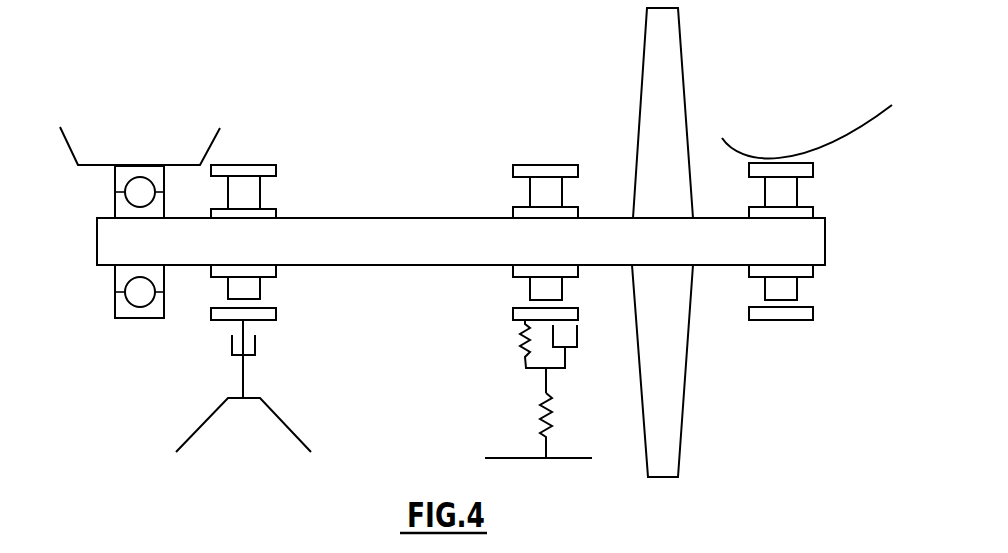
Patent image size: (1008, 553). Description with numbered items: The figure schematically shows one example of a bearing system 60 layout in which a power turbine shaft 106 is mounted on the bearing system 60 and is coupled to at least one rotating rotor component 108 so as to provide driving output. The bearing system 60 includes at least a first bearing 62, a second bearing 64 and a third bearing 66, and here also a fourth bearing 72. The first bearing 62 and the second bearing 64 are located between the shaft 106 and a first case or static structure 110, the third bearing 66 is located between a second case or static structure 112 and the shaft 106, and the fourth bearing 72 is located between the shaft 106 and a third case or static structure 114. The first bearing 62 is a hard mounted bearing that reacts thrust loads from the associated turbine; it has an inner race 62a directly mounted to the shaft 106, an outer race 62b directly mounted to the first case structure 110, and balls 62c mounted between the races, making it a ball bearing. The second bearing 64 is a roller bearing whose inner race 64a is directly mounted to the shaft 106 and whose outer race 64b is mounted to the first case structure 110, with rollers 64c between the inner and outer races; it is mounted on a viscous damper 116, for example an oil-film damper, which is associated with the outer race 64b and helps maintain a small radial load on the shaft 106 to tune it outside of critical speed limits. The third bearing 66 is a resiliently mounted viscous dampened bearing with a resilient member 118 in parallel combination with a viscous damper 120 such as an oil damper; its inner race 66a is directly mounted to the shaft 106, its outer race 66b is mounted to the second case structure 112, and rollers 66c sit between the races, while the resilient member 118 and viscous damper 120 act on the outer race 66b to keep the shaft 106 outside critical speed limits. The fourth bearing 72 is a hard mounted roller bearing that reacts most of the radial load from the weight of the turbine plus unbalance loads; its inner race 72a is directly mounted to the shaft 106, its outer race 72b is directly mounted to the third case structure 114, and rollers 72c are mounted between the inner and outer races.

The bearing system 60 is at (100, 94).
The first bearing 62 is at (133, 246).
The inner race 62a is at (155, 213).
The outer race 62b is at (133, 172).
The balls 62c is at (128, 185).
The second bearing 64 is at (279, 231).
The inner race 64a is at (277, 215).
The outer race 64b is at (242, 163).
The rollers 64c is at (262, 195).
The third bearing 66 is at (509, 222).
The inner race 66a is at (515, 215).
The outer race 66b is at (550, 163).
The rollers 66c is at (530, 197).
The fourth bearing 72 is at (822, 253).
The inner race 72a is at (817, 213).
The outer race 72b is at (815, 167).
The rollers 72c is at (798, 287).
The power turbine shaft 106 is at (365, 228).
The rotating rotor component 108 is at (672, 80).
The first case structure 110 is at (210, 152).
The second case structure 112 is at (502, 457).
The third case structure 114 is at (865, 138).
The viscous damper 116 is at (245, 372).
The resilient member 118 is at (520, 343).
The viscous damper 120 is at (573, 347).